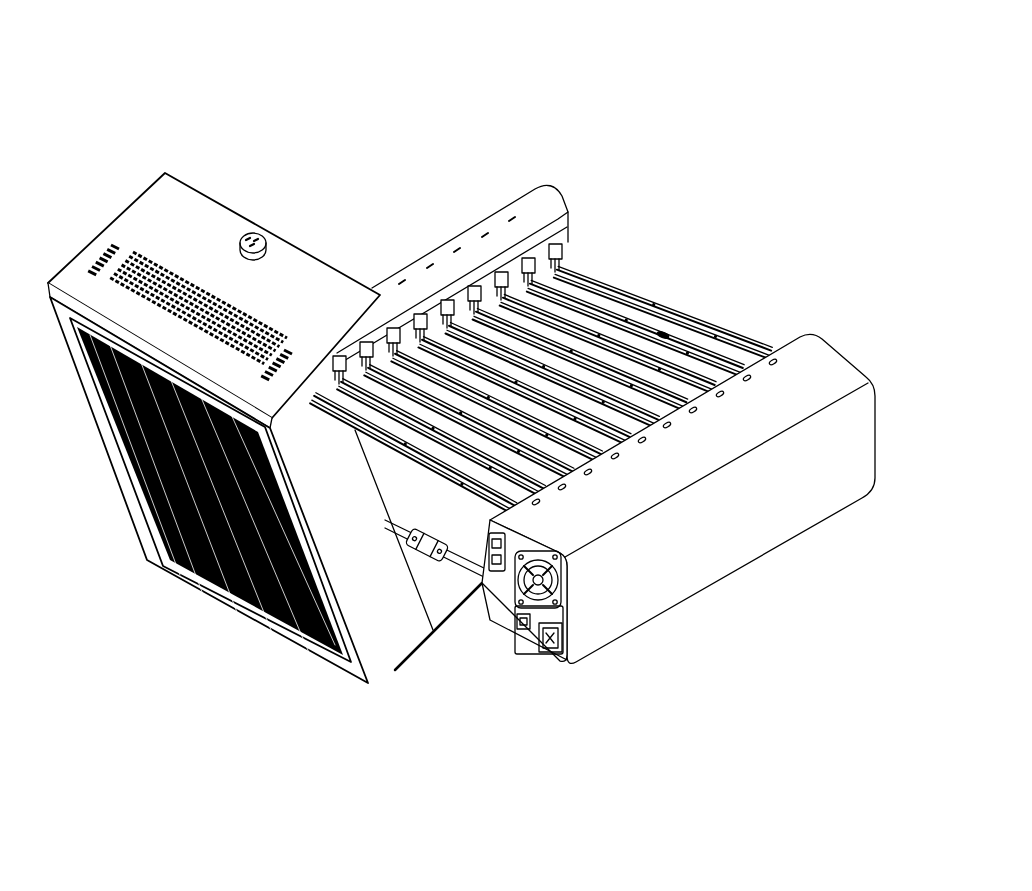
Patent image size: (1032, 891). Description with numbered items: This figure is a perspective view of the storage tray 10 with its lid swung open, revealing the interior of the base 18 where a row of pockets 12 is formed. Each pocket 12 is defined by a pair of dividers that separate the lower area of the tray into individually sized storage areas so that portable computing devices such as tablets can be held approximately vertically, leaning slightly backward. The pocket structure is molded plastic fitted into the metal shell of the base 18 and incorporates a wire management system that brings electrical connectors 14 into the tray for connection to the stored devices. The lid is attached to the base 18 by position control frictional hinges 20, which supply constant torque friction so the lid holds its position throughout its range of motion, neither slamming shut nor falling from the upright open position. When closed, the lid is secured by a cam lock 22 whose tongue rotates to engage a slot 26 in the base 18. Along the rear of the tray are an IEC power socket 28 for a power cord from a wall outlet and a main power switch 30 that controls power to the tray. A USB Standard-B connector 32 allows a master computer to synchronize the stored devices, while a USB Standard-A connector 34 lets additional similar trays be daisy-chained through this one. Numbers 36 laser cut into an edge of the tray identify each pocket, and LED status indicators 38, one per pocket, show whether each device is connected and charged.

The storage tray 10 is at (525, 108).
The pockets 12 is at (597, 375).
The electrical connectors 14 is at (487, 405).
The base 18 is at (808, 378).
The position control frictional hinges 20 is at (442, 567).
The cam lock 22 is at (250, 234).
The slot 26 is at (662, 334).
The IEC power socket 28 is at (543, 653).
The main power switch 30 is at (513, 630).
The USB Standard-B connector 32 is at (563, 593).
The USB Standard-A connector 34 is at (488, 575).
The numbers 36 is at (402, 284).
The LED status indicators 38 is at (618, 458).